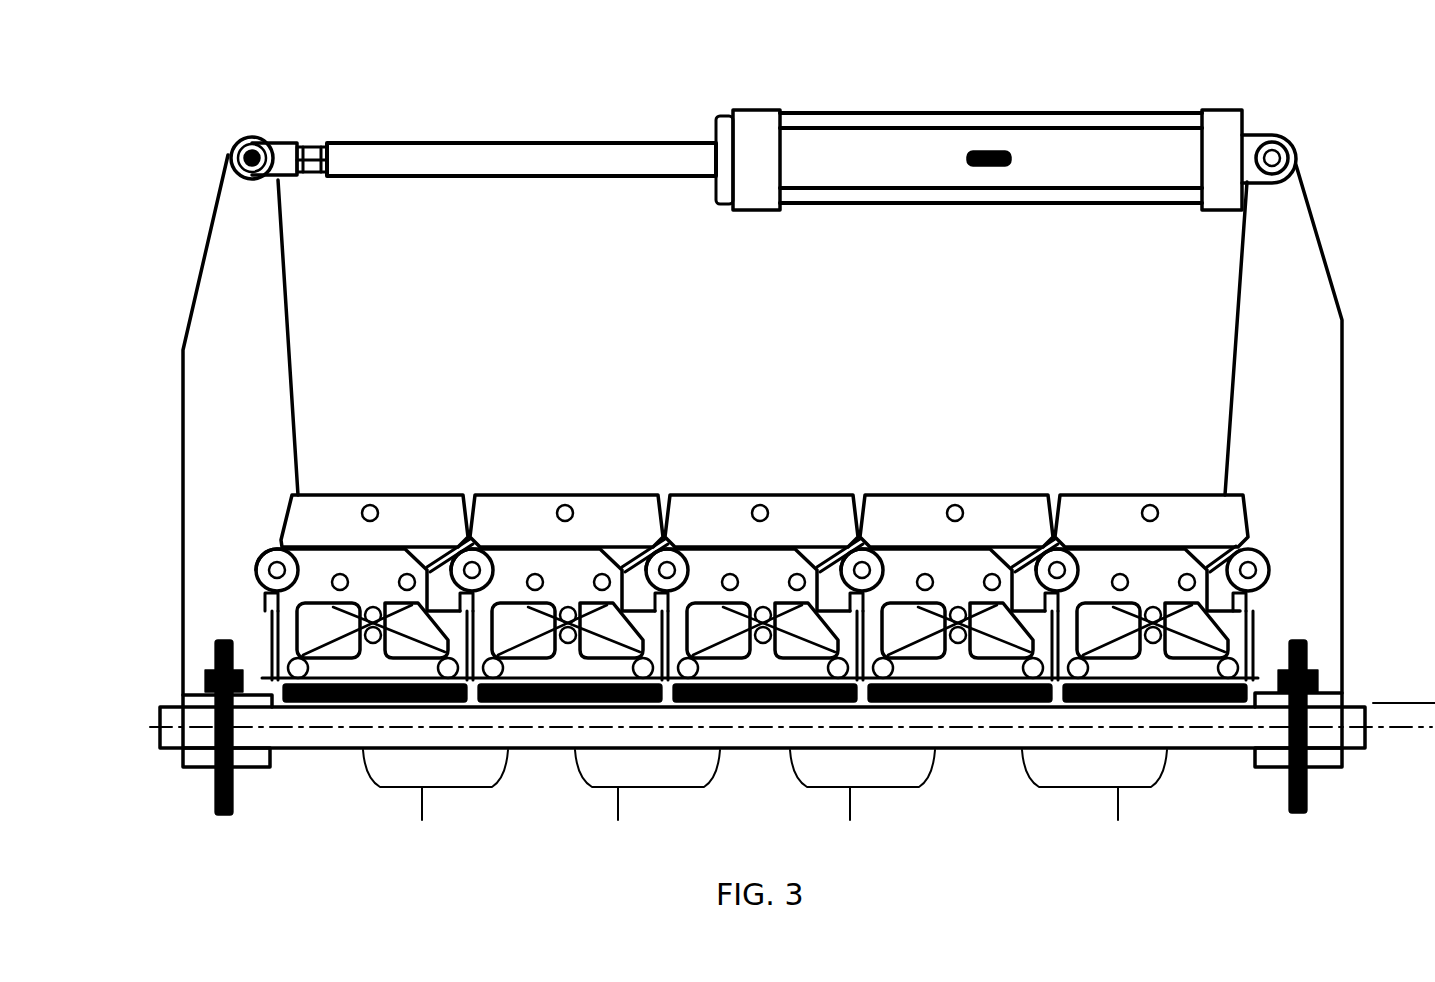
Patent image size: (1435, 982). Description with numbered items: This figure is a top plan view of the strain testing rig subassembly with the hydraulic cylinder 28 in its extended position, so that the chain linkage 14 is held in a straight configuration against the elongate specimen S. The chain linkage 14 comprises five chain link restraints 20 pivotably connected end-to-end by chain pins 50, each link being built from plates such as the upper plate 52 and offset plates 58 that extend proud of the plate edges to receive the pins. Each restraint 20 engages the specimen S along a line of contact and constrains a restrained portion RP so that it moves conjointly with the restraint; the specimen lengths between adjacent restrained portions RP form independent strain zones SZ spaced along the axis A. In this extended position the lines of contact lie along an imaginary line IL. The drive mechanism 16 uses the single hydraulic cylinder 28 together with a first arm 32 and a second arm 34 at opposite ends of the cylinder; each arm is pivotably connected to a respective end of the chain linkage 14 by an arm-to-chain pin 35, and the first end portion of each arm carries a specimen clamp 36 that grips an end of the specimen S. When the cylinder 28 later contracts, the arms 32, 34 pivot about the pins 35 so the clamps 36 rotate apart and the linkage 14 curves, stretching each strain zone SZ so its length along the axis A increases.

The chain linkage 14 is at (781, 531).
The drive mechanism 16 is at (788, 139).
The chain link restraint 20 is at (292, 496).
The hydraulic cylinder 28 is at (920, 112).
The first arm 32 is at (222, 325).
The second arm 34 is at (1328, 552).
The arm-to-chain pin 35 is at (267, 562).
The specimen clamp 36 is at (210, 782).
The chain pin 50 is at (478, 567).
The upper plate 52 is at (274, 592).
The offset plate 58 is at (1260, 590).
The restrained portion RP is at (372, 717).
The independent strain zone SZ is at (765, 798).
The imaginary line IL is at (1395, 702).
The axis A is at (1330, 728).
The elongate specimen S is at (1342, 740).